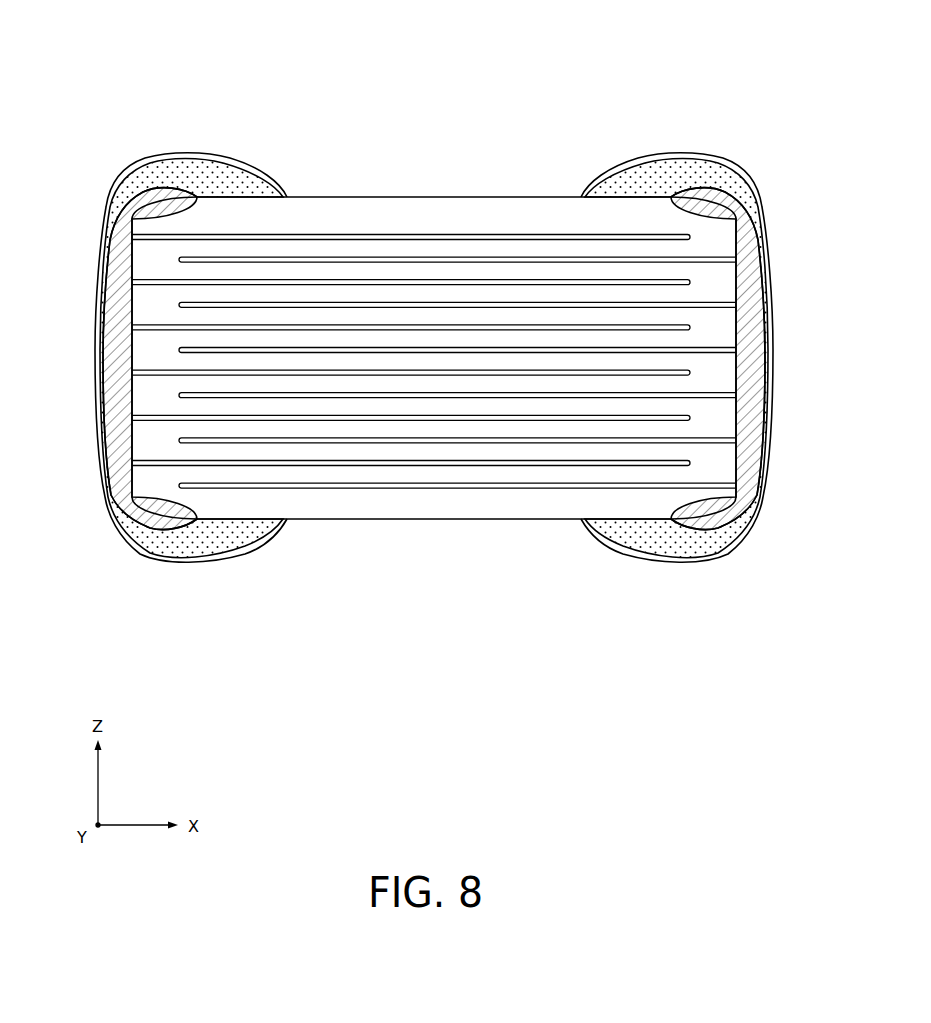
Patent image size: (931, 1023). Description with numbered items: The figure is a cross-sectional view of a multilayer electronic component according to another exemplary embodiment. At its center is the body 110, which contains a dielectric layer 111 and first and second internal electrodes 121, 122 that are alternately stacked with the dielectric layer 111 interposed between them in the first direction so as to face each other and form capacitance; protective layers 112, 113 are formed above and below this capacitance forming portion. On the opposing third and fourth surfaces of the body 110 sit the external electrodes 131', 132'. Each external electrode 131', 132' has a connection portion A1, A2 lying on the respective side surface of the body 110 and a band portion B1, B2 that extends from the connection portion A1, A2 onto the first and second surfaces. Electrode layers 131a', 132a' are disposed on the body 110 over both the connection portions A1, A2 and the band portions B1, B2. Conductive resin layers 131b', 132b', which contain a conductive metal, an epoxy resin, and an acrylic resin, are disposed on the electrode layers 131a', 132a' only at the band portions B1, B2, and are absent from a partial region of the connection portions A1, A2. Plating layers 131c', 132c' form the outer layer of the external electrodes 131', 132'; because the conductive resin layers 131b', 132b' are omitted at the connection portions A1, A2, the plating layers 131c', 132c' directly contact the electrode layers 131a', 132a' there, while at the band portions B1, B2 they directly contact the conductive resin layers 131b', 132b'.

The body 110 is at (481, 189).
The dielectric layer 111 is at (423, 250).
The protective layer 112 is at (525, 215).
The protective layer 113 is at (426, 510).
The first internal electrode 121 is at (320, 234).
The second internal electrode 122 is at (368, 257).
The external electrode 131' is at (182, 414).
The electrode layer 131a' is at (137, 411).
The conductive resin layer 131b' is at (191, 397).
The plating layer 131c' is at (191, 394).
The external electrode 132' is at (666, 414).
The electrode layer 132a' is at (665, 411).
The conductive resin layer 132b' is at (676, 397).
The plating layer 132c' is at (677, 394).
The connection portion A1 is at (132, 497).
The connection portion A2 is at (736, 218).
The band portion B1 is at (284, 197).
The band portion B2 is at (737, 219).